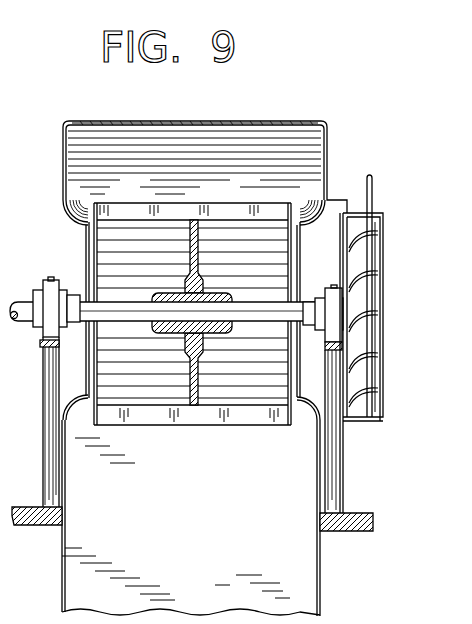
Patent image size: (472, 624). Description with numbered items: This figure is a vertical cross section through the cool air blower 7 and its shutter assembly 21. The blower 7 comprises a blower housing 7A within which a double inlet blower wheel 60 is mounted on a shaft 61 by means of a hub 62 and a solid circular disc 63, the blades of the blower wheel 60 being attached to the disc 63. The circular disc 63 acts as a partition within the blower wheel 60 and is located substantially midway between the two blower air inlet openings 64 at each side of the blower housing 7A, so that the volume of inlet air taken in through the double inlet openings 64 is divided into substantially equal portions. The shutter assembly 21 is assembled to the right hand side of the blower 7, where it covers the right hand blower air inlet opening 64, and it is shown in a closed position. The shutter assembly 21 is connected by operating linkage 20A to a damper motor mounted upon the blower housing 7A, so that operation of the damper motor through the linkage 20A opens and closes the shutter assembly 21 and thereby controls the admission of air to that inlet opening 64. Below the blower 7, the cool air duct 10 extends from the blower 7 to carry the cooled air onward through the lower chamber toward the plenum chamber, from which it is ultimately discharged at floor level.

The blower 7 is at (268, 142).
The blower housing 7A is at (178, 121).
The operating linkage 20A is at (369, 176).
The double inlet openings 64 is at (68, 236).
The shaft 61 is at (22, 302).
The double inlet blower wheel 60 is at (146, 413).
The solid circular disc 63 is at (197, 390).
The hub 62 is at (220, 333).
The shutter assembly 21 is at (369, 422).
The cool air duct 10 is at (193, 541).